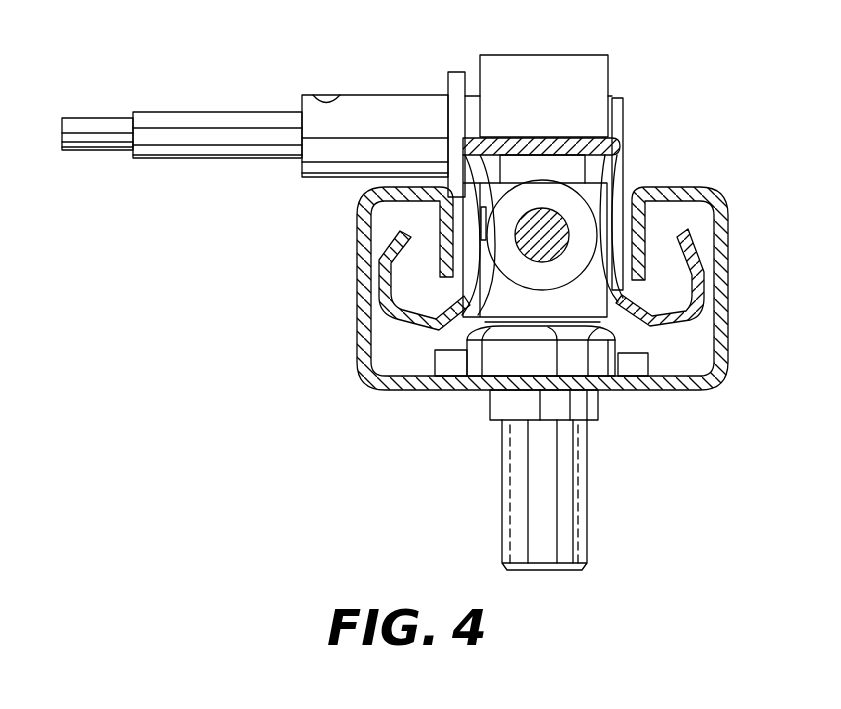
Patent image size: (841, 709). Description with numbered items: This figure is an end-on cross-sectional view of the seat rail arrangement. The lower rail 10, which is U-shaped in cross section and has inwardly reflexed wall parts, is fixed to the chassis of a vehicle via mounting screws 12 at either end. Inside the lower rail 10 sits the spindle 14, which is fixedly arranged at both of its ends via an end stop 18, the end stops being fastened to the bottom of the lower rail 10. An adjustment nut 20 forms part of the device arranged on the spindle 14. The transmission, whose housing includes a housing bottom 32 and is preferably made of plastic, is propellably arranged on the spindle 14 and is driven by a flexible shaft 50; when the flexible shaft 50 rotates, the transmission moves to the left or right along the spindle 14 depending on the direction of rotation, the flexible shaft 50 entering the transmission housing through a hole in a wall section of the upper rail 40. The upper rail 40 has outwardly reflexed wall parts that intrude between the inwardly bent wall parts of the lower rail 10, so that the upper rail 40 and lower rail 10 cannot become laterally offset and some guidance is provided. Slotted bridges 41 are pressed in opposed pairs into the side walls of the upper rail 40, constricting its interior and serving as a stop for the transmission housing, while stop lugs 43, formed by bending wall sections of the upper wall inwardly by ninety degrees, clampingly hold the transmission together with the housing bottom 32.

The lower rail 10 is at (370, 372).
The mounting screw 12 is at (585, 547).
The spindle 14 is at (532, 207).
The end stop 18 is at (650, 365).
The adjustment nut 20 is at (527, 180).
The housing bottom 32 is at (480, 55).
The upper rail 40 is at (702, 233).
The slotted bridge 41 is at (612, 192).
The stop lug 43 is at (600, 163).
The flexible shaft 50 is at (138, 110).